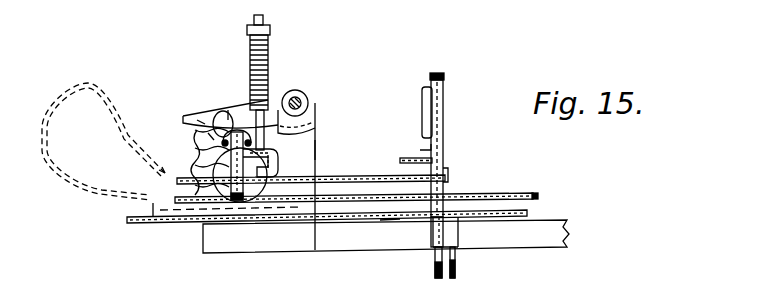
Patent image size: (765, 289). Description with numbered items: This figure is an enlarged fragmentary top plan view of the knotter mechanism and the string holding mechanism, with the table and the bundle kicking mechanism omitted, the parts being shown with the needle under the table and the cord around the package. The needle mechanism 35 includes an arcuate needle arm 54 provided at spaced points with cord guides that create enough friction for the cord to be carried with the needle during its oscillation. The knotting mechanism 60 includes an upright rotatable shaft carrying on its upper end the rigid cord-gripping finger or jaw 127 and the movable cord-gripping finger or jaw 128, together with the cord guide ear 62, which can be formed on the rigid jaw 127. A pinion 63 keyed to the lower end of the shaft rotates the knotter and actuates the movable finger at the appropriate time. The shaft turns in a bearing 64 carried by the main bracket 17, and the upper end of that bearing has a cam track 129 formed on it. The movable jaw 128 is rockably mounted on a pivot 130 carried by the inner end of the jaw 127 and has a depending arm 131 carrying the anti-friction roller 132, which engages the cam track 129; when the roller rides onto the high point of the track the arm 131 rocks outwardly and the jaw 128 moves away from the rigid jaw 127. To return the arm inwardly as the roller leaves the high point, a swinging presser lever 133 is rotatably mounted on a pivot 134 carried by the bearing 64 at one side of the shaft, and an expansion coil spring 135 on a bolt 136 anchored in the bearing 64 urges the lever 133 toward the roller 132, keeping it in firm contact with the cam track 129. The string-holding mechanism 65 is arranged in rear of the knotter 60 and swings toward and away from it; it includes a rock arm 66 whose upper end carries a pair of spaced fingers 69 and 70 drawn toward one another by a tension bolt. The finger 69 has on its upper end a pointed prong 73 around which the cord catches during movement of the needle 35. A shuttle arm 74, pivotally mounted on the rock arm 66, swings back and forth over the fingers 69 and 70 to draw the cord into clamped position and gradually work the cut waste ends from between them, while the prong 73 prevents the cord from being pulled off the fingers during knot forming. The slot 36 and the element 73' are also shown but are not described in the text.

The main bracket 17 is at (548, 237).
The needle mechanism 35 is at (540, 188).
The slot 36 is at (390, 217).
The arcuate needle arm 54 is at (540, 199).
The knotting mechanism 60 is at (270, 160).
The cord guide ear 62 is at (316, 148).
The pinion 63 is at (219, 101).
The bearing 64 is at (216, 240).
The string-holding mechanism 65 is at (445, 142).
The rock arm 66 is at (446, 121).
The finger 69 is at (448, 182).
The finger 70 is at (420, 150).
The pointed prong 73 is at (448, 161).
The nut 73' is at (472, 247).
The shuttle arm 74 is at (432, 260).
The rigid cord-gripping finger or jaw 127 is at (265, 195).
The movable cord-gripping finger or jaw 128 is at (207, 163).
The cam track 129 is at (200, 187).
The pivot 130 is at (213, 135).
The depending arm 131 is at (272, 92).
The anti-friction roller 132 is at (228, 110).
The swinging presser lever 133 is at (197, 120).
The pivot 134 is at (308, 101).
The expansion coil spring 135 is at (270, 62).
The bolt 136 is at (317, 128).